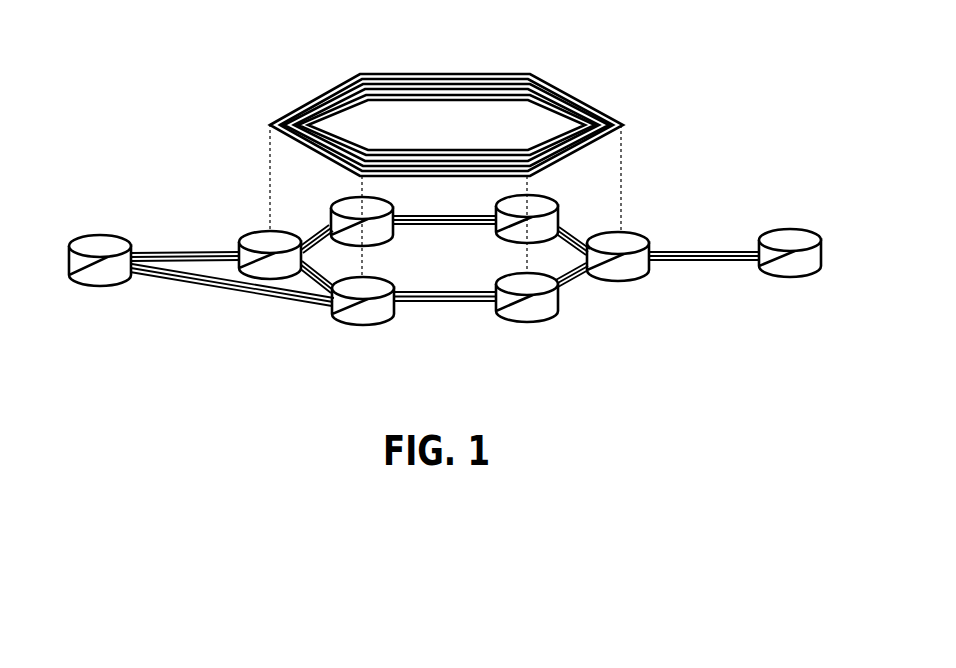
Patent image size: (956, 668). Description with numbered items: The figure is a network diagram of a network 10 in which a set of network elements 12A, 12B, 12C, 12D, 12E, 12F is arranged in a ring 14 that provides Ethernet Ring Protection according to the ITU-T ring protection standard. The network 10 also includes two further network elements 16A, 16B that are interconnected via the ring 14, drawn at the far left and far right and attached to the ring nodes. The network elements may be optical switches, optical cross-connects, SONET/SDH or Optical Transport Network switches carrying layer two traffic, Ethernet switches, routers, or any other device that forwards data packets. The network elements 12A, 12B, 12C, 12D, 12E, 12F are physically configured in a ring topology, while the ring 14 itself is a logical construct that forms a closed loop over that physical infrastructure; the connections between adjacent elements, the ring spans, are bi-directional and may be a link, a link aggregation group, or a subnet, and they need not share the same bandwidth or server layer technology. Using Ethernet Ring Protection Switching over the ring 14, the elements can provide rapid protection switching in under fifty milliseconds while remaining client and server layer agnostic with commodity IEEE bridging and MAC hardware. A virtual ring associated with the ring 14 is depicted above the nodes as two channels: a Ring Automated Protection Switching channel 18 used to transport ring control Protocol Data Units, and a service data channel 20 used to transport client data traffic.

The network 10 is at (726, 48).
The network element 12A is at (332, 200).
The network element 12B is at (557, 200).
The network element 12C is at (650, 234).
The network element 12D is at (518, 323).
The network element 12E is at (352, 326).
The network element 12F is at (262, 231).
The ring 14 is at (451, 271).
The network element 16A is at (100, 283).
The network element 16B is at (785, 276).
The Ring Automated Protection Switching (R-APS) channel 18 is at (490, 97).
The service data channel 20 is at (466, 72).